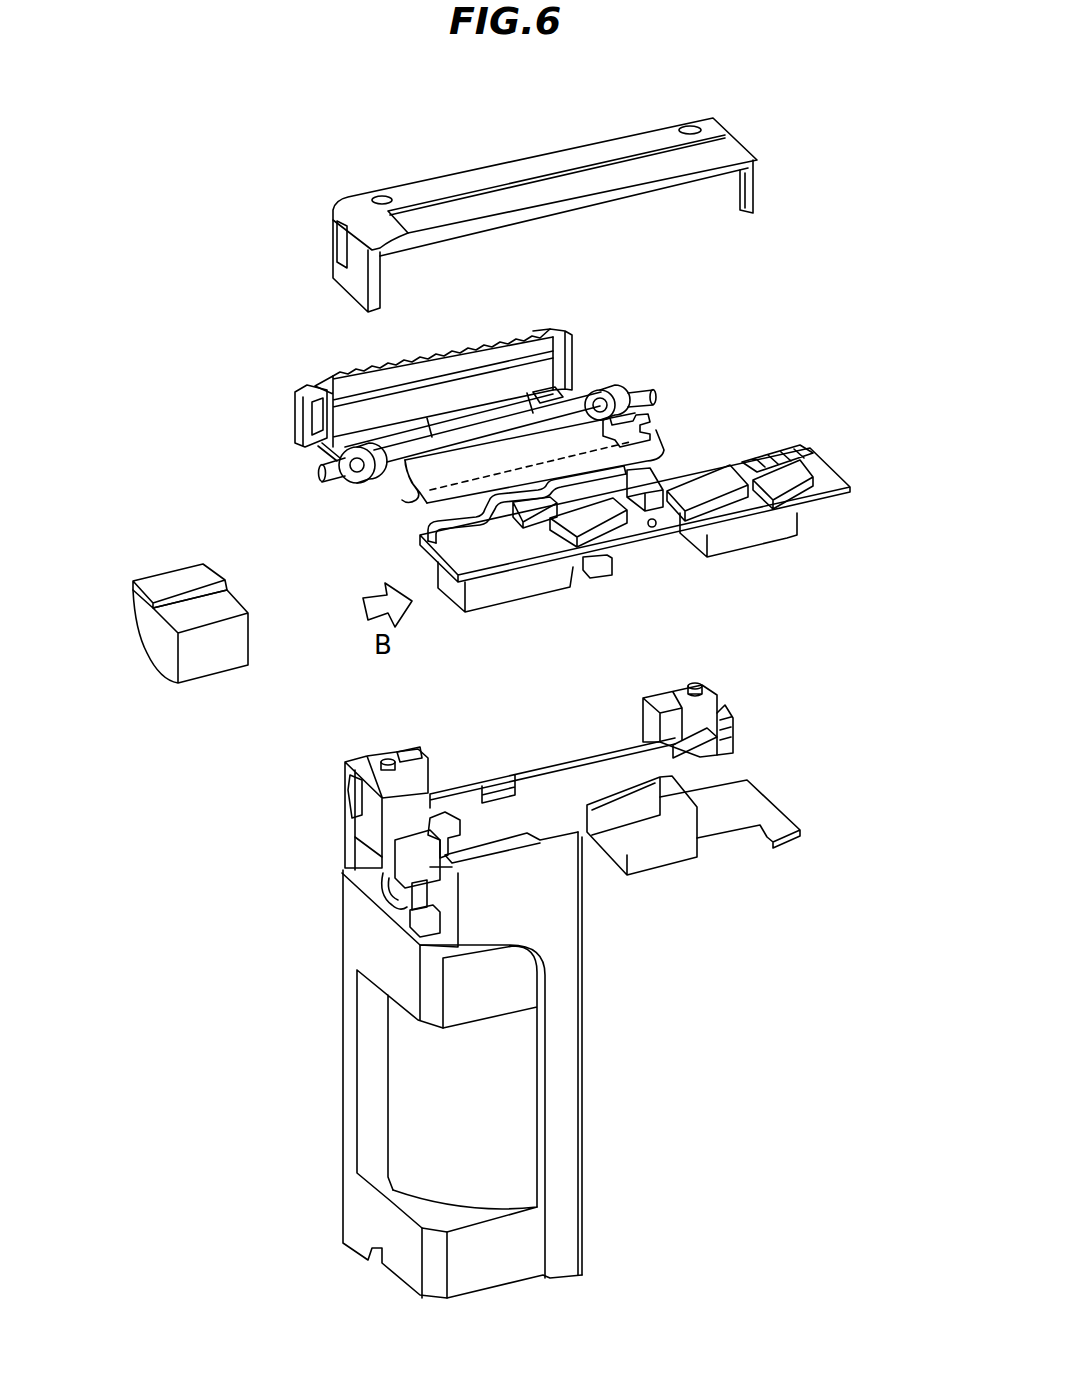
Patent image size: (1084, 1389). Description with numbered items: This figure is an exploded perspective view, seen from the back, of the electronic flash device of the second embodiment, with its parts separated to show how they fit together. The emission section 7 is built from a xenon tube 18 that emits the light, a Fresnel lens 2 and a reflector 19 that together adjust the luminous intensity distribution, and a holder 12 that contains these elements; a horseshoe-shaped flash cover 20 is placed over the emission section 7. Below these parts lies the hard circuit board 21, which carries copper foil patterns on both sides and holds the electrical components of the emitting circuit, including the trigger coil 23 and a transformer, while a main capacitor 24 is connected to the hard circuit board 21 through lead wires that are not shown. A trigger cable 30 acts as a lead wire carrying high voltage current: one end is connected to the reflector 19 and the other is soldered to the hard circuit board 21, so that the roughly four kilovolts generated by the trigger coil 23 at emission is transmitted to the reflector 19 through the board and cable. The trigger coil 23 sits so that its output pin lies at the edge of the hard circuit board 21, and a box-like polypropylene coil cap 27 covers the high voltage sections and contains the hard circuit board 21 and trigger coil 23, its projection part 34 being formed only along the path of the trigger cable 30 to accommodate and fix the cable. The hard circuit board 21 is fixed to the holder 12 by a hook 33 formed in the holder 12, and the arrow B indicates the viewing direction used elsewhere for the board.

The Fresnel lens 2 is at (355, 385).
The emission section 7 is at (748, 337).
The holder 12 is at (528, 990).
The xenon tube 18 is at (585, 405).
The reflector 19 is at (430, 492).
The flash cover 20 is at (485, 180).
The hard circuit board 21 is at (833, 480).
The trigger coil 23 is at (540, 580).
The main capacitor 24 is at (508, 1100).
The coil cap 27 is at (190, 629).
The trigger cable 30 is at (660, 462).
The hook 33 is at (437, 823).
The projection part 34 is at (178, 578).